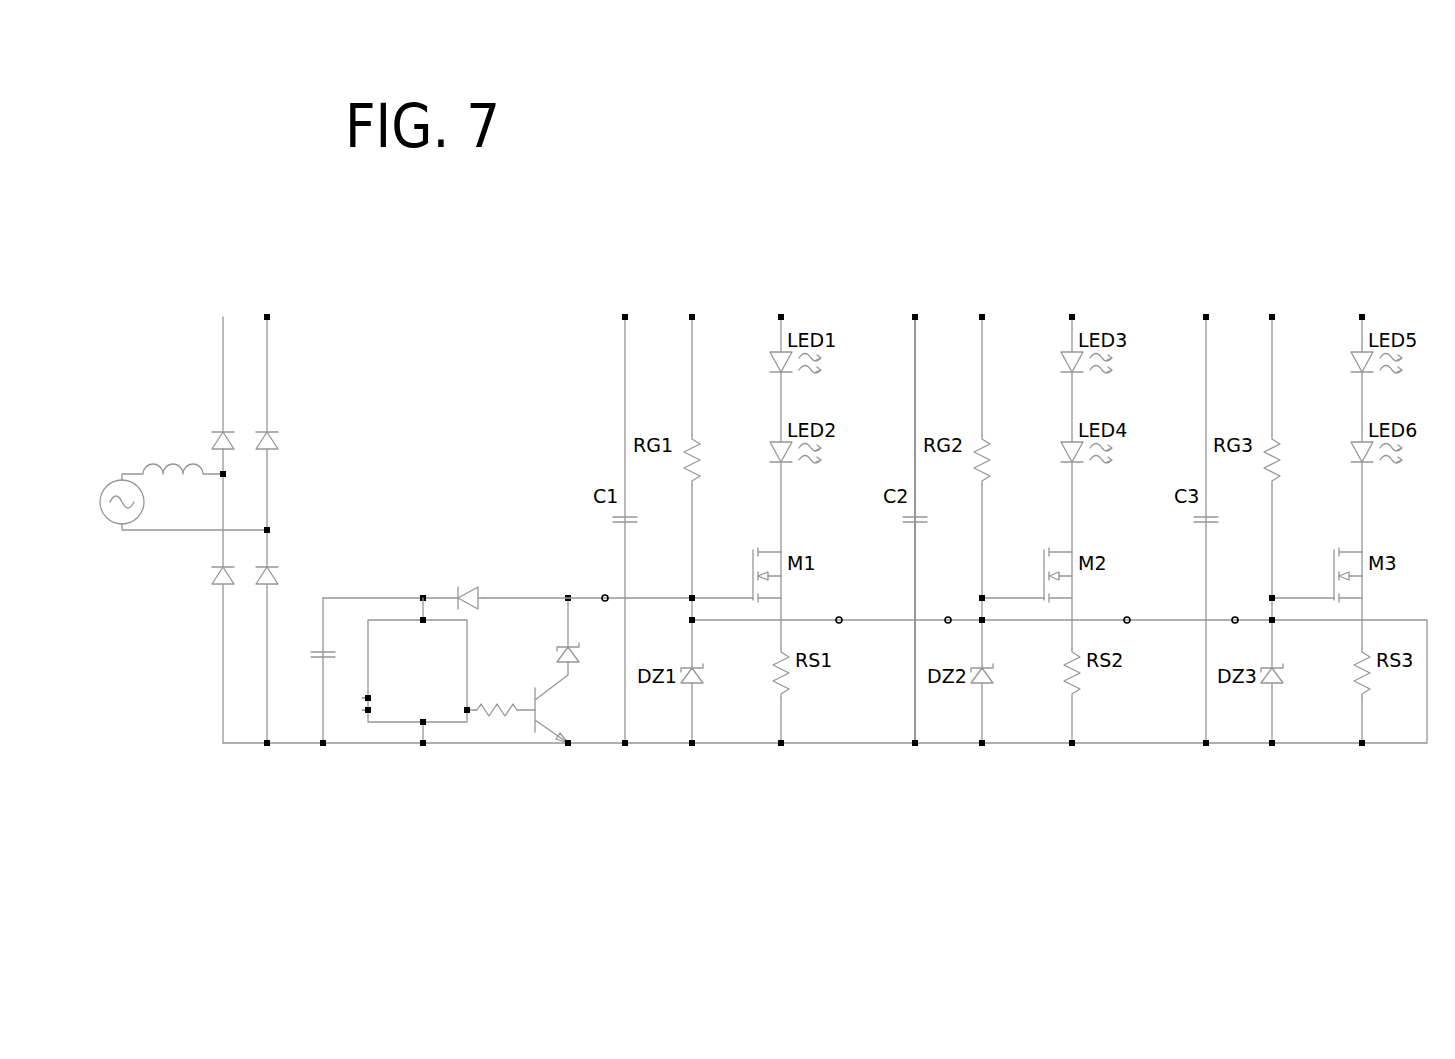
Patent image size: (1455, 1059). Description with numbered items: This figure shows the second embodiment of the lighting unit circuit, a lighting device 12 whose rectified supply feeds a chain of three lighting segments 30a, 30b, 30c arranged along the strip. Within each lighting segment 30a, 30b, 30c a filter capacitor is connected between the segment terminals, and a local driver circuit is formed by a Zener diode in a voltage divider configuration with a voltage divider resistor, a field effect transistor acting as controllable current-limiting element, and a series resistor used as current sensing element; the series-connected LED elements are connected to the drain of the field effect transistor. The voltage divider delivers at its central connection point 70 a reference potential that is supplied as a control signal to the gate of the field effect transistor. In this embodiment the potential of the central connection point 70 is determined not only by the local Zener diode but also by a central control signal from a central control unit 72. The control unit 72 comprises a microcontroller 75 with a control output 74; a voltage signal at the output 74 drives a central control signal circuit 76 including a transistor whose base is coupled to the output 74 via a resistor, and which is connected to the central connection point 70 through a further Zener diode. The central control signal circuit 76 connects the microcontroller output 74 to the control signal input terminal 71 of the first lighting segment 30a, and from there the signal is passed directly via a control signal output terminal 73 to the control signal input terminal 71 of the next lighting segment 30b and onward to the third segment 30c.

The lighting device power input and rectifier 12 is at (190, 347).
The lighting segment 30a is at (622, 305).
The lighting segment 30b is at (915, 305).
The lighting segment 30c is at (1213, 305).
The central connection point 70 is at (692, 598).
The control signal input terminal 71 is at (605, 595).
The central control unit 72 is at (620, 756).
The control signal output terminal 73 is at (839, 620).
The control output 74 is at (470, 685).
The microcontroller 75 is at (437, 710).
The central control signal circuit 76 is at (485, 585).